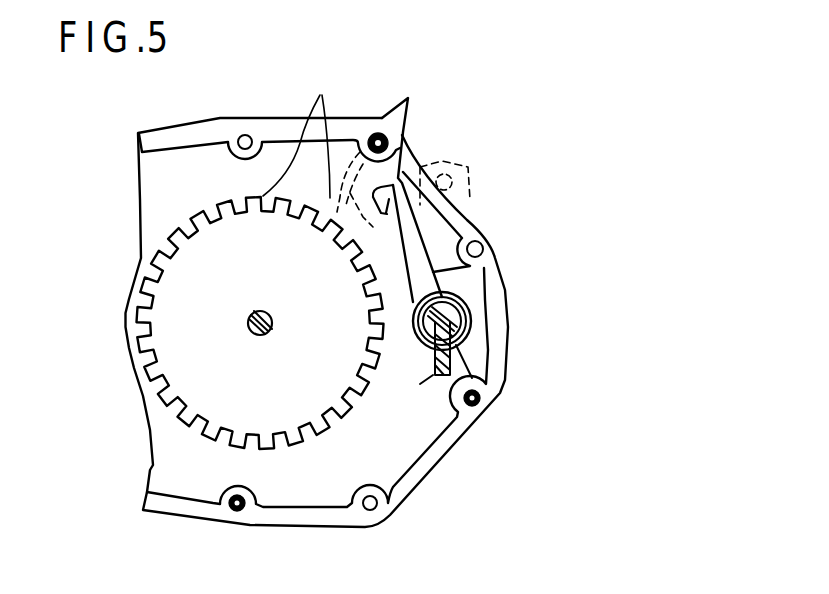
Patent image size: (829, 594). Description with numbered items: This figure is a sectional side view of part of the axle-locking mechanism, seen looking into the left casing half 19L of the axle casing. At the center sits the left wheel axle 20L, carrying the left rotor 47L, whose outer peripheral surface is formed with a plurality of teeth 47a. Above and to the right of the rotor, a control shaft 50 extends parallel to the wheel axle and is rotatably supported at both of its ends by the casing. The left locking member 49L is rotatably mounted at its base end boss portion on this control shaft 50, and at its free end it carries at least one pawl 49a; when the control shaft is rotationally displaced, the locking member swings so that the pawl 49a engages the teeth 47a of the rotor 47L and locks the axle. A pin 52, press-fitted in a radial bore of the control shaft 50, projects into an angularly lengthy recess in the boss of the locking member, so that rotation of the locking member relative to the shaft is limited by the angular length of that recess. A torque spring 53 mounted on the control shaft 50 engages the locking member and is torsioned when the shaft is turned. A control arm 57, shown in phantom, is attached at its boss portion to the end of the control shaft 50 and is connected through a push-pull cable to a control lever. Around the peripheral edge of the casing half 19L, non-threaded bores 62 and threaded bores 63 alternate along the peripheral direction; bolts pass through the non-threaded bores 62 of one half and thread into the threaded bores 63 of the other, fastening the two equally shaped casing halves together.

The left casing half 19L is at (449, 460).
The left rotor 47L is at (190, 276).
The left wheel axle 20L is at (257, 312).
The teeth 47a is at (307, 129).
The pawl 49a is at (412, 107).
The left locking member 49L is at (494, 266).
The control shaft 50 is at (458, 331).
The pin 52 is at (433, 373).
The torque spring 53 is at (503, 388).
The control arm 57 is at (465, 197).
The non-threaded bores 62 is at (241, 136).
The threaded bores 63 is at (248, 499).